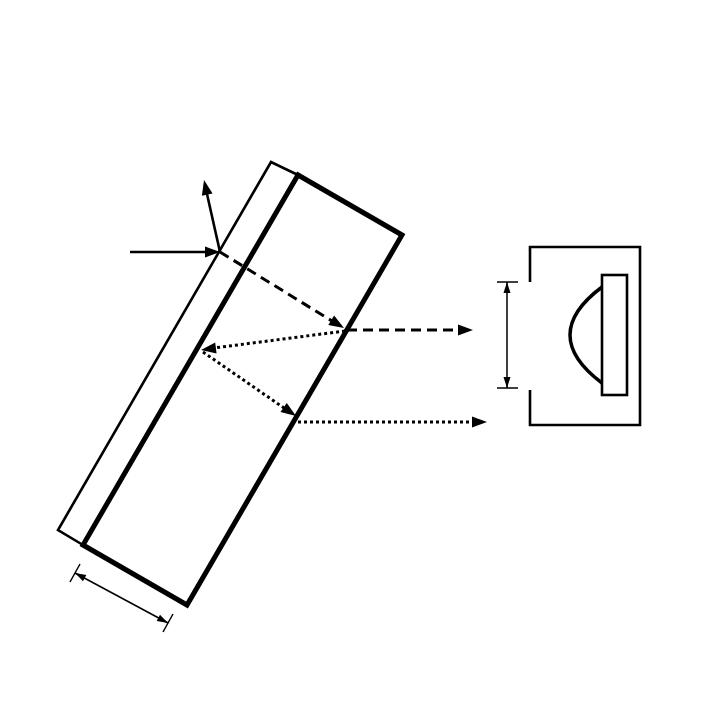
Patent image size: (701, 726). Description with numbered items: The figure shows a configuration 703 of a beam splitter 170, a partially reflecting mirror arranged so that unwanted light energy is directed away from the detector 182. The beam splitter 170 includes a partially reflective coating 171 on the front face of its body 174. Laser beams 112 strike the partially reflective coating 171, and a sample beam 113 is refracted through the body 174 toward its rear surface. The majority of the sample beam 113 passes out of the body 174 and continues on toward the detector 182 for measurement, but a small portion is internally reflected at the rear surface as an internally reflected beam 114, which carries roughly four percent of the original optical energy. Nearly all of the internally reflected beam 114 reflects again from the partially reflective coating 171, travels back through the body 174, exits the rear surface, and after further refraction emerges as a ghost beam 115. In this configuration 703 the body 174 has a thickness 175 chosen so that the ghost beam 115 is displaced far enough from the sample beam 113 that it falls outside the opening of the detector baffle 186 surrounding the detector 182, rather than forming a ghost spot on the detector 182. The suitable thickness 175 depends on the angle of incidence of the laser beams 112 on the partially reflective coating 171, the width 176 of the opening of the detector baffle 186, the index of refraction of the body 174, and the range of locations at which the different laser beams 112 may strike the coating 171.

The configuration 703 is at (389, 72).
The beam splitter 170 is at (306, 503).
The partially reflective coating 171 is at (285, 160).
The body 174 is at (242, 518).
The thickness 175 is at (120, 602).
The laser beams 112 is at (177, 250).
The sample beam 113 is at (385, 328).
The internally reflected beam 114 is at (288, 342).
The ghost beam 115 is at (373, 423).
The width 176 is at (503, 330).
The detector baffle 186 is at (567, 245).
The detector 182 is at (610, 397).